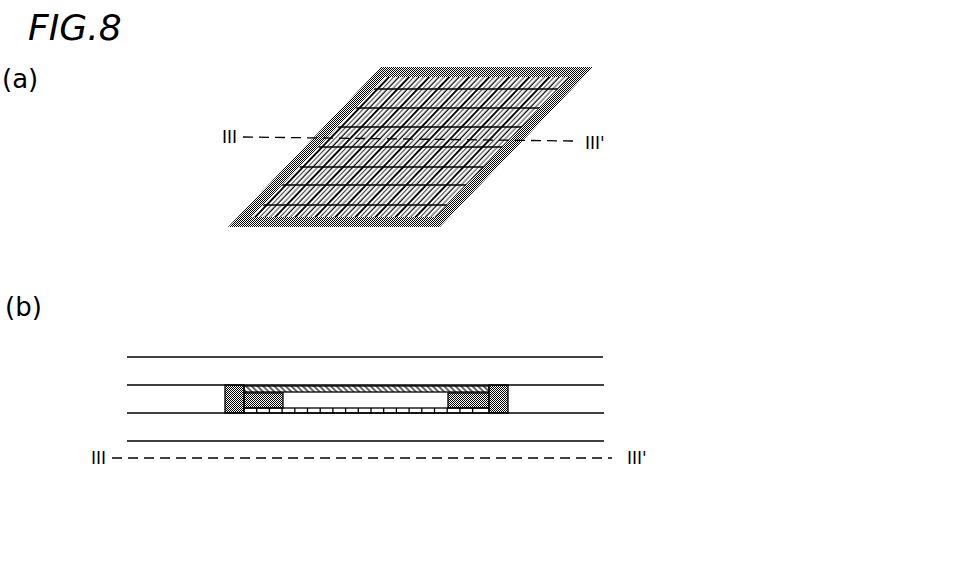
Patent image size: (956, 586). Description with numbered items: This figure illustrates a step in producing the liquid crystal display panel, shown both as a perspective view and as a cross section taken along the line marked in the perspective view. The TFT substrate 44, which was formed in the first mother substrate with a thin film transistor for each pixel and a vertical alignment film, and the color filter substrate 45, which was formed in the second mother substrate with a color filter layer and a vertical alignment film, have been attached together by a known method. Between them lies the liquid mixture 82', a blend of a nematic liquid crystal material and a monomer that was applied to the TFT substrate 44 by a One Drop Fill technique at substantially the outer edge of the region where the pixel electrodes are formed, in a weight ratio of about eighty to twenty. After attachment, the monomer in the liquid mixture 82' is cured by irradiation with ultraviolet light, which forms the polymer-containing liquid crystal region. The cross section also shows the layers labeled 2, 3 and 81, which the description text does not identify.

The first substrate 2 is at (597, 428).
The second substrate 3 is at (596, 362).
The TFT substrate 44 is at (652, 422).
The color filter substrate 45 is at (627, 73).
The inner element 81 is at (382, 403).
The liquid mixture 82' is at (428, 230).